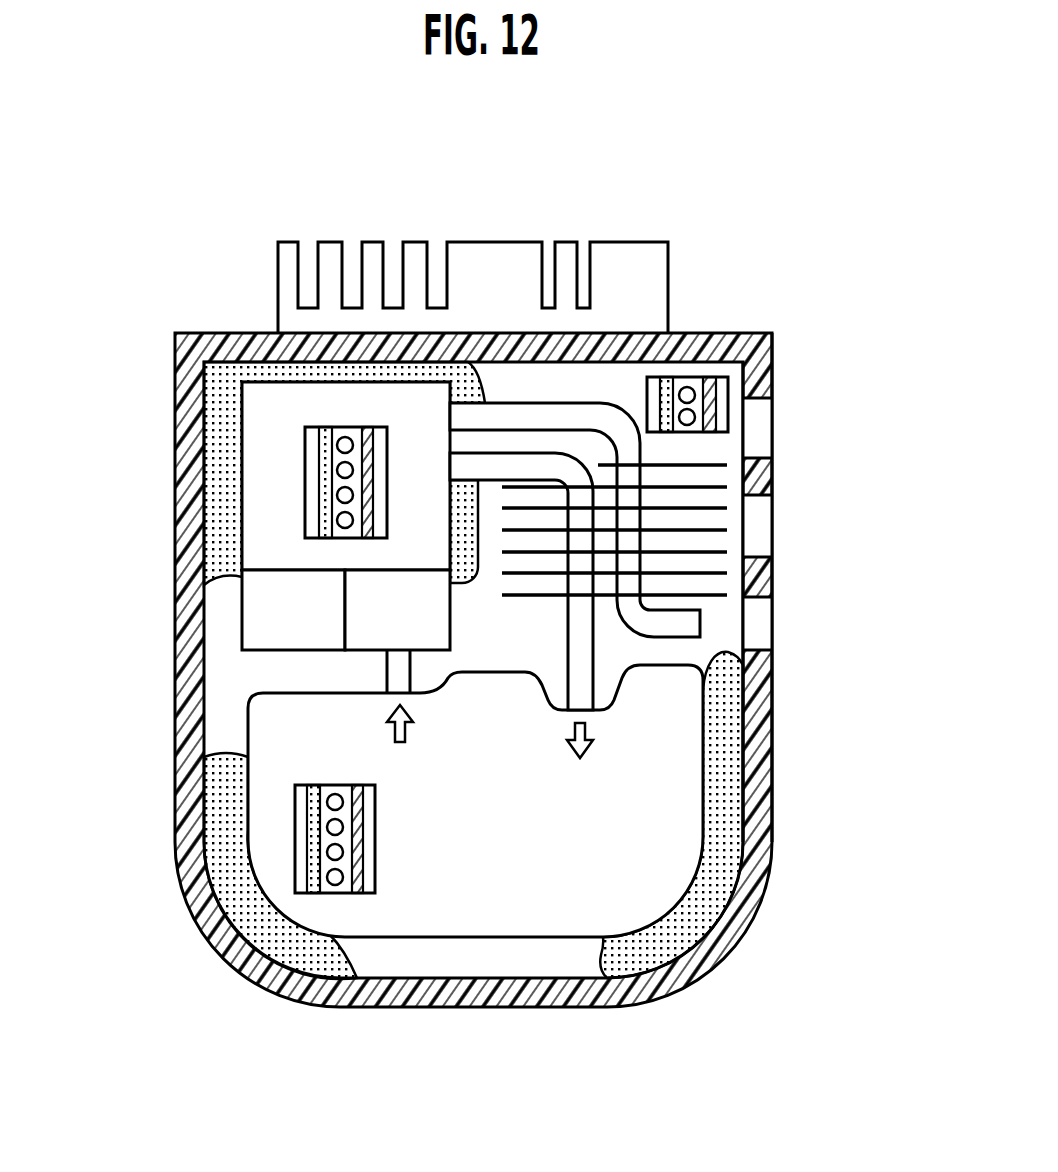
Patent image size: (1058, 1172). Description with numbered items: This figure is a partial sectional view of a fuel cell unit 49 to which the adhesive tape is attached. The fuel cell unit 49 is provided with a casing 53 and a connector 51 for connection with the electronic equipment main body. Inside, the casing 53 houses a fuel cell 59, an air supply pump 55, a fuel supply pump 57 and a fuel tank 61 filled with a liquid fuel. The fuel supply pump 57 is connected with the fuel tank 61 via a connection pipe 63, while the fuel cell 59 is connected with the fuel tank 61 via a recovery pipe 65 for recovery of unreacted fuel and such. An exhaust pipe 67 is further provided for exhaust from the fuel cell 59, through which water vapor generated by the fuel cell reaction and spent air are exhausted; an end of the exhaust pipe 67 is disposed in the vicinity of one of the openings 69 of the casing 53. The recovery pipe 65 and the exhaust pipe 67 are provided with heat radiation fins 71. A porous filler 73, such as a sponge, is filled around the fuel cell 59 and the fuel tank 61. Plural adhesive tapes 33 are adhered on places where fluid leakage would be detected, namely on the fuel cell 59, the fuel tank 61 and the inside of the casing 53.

The fuel cell unit 49 is at (832, 278).
The connector 51 is at (632, 242).
The casing 53 is at (745, 825).
The air supply pump 55 is at (260, 633).
The fuel supply pump 57 is at (428, 607).
The fuel cell 59 is at (265, 432).
The fuel tank 61 is at (660, 880).
The connection pipe 63 is at (400, 672).
The recovery pipe 65 is at (583, 672).
The exhaust pipe 67 is at (578, 413).
The openings 69 is at (758, 540).
The heat radiation fins 71 is at (718, 487).
The porous filler 73 is at (217, 378).
The adhesive tapes 33 is at (304, 508).